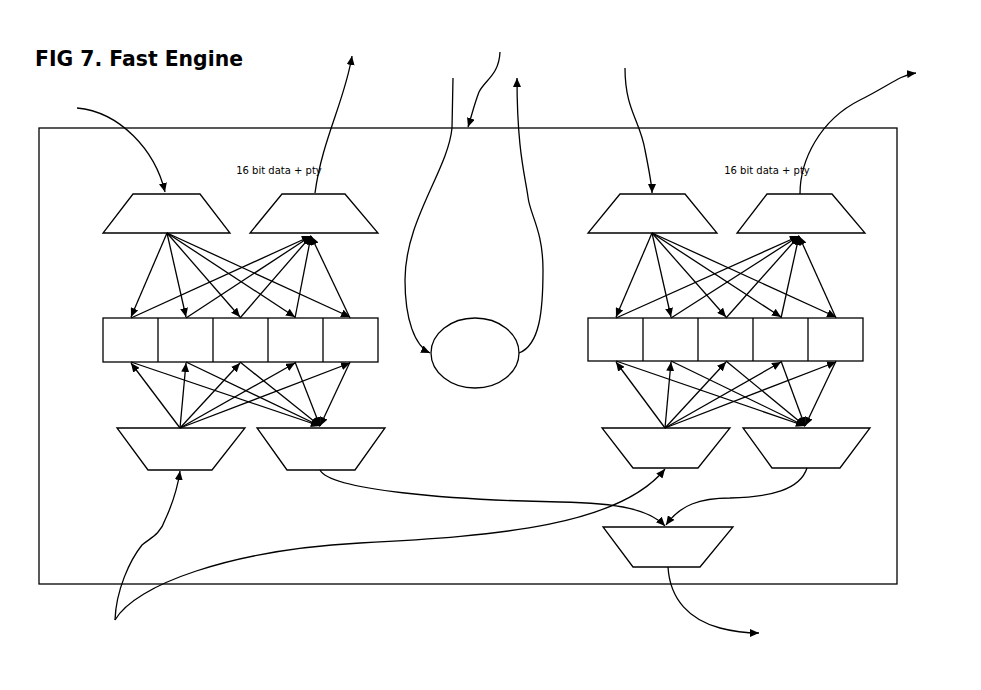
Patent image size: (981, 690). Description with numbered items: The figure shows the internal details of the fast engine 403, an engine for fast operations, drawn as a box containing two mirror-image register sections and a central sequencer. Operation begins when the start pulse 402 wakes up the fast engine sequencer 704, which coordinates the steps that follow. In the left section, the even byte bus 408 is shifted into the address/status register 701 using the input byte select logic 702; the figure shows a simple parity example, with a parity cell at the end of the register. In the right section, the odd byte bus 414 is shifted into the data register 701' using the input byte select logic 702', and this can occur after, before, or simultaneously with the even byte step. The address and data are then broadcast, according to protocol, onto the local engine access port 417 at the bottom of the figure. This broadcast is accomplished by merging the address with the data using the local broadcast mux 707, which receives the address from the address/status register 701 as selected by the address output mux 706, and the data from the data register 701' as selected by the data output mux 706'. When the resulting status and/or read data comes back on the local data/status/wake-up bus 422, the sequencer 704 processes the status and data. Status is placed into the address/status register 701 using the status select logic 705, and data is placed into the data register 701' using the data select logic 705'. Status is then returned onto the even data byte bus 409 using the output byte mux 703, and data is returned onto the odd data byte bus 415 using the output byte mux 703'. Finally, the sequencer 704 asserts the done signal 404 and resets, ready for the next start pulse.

The address/status register 701 is at (212, 317).
The input byte select logic 702 is at (202, 243).
The output byte mux 703 is at (281, 245).
The fast engine sequencer 704 is at (472, 317).
The status select logic 705 is at (204, 419).
The address output mux 706 is at (285, 418).
The data register 701' is at (704, 307).
The input byte select logic 702' is at (693, 237).
The output byte mux 703' is at (748, 237).
The data select logic 705' is at (690, 418).
The data output mux 706' is at (774, 417).
The local broadcast mux 707 is at (719, 548).
The start pulse 402 is at (449, 106).
The fast engine 403 is at (492, 74).
The done signal 404 is at (523, 112).
The even byte bus 408 is at (166, 165).
The even data byte bus 409 is at (341, 97).
The odd byte bus 414 is at (664, 121).
The odd data byte bus 415 is at (853, 127).
The local engine access port 417 is at (687, 618).
The local data/status/wake-up bus 422 is at (143, 597).